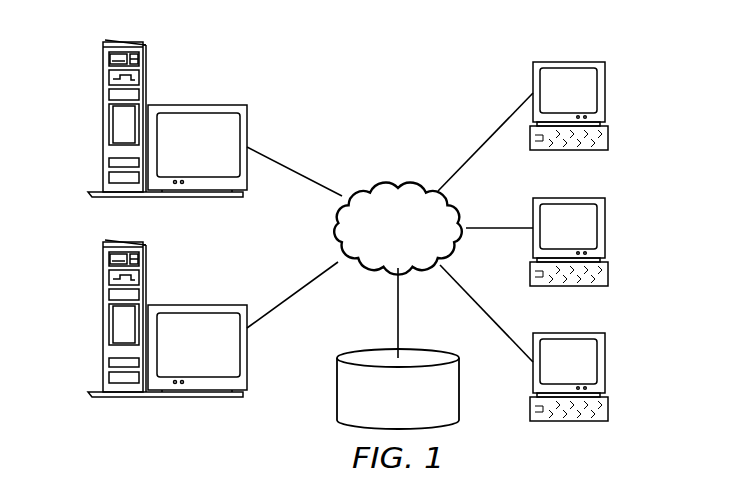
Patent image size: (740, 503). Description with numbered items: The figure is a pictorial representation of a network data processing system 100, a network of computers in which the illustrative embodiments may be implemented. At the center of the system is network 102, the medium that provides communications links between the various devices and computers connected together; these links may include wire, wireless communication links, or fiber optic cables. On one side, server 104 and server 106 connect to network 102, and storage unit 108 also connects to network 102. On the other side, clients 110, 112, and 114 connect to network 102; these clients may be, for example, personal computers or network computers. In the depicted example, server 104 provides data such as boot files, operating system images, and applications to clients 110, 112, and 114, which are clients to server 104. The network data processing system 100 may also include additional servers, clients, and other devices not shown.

The network data processing system 100 is at (448, 80).
The network 102 is at (370, 181).
The server 104 is at (103, 123).
The server 106 is at (103, 323).
The storage unit 108 is at (337, 398).
The client 110 is at (605, 92).
The client 112 is at (605, 228).
The client 114 is at (605, 362).